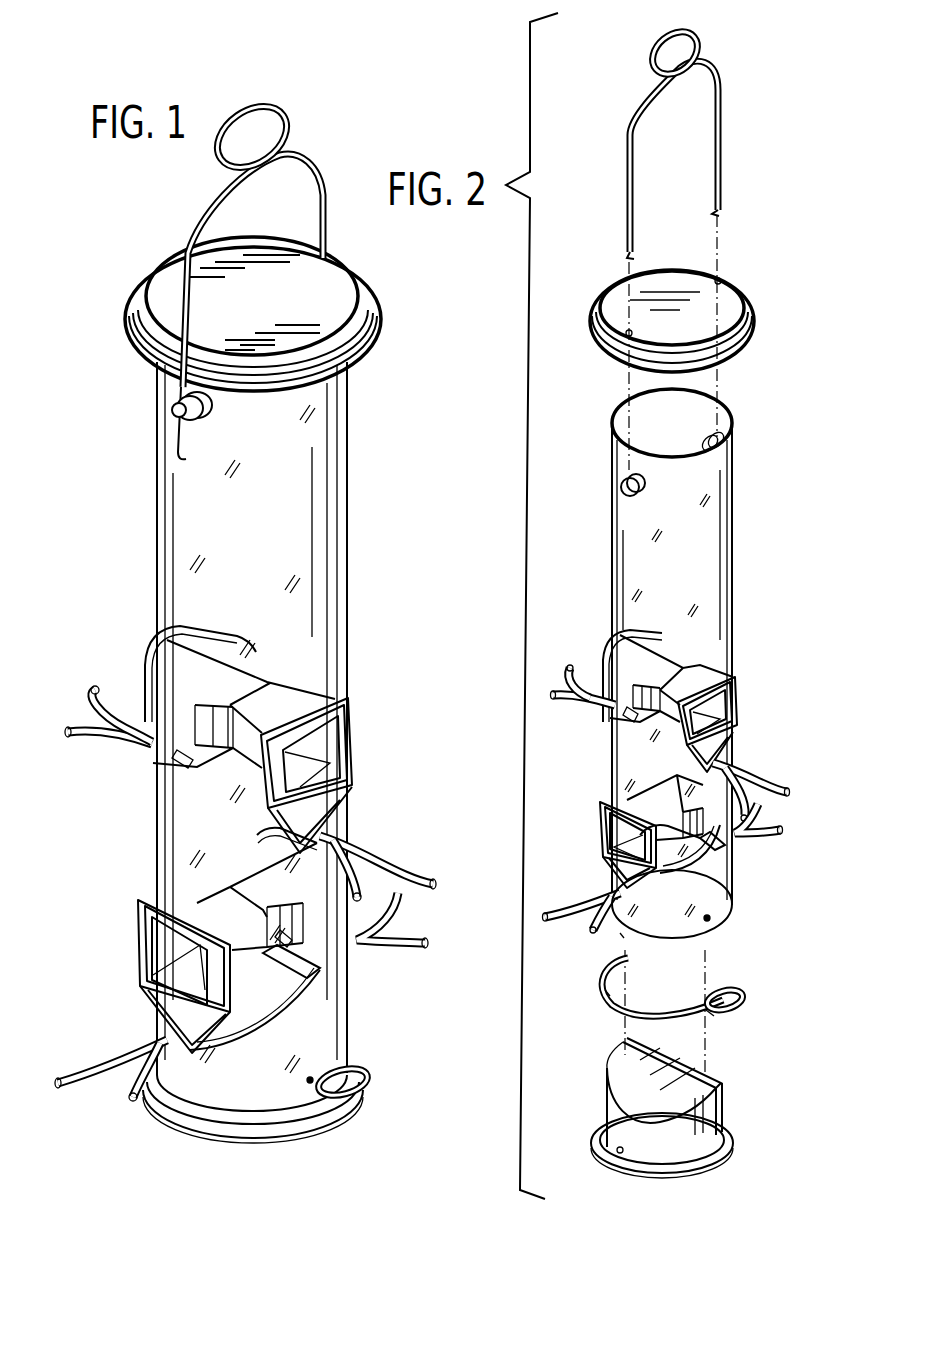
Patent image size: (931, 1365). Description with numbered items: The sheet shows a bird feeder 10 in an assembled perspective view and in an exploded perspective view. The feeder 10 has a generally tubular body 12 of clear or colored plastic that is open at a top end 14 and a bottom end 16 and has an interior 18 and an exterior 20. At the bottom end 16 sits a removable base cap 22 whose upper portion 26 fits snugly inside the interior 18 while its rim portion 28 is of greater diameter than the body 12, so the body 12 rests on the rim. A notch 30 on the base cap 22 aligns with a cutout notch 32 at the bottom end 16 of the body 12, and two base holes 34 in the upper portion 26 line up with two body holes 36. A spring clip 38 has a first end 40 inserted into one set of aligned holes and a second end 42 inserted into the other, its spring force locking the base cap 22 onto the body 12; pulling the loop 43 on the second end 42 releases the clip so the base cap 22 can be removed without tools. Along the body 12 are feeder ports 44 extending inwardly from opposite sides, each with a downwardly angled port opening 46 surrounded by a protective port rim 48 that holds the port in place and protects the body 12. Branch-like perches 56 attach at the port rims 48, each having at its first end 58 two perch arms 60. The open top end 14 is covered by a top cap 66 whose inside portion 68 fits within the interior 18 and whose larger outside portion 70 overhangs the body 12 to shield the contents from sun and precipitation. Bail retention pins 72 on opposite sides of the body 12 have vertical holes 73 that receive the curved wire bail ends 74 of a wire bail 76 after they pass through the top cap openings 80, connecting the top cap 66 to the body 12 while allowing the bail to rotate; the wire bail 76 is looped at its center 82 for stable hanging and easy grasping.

In FIG. 1, the feeder 10 is at (156, 517).
In FIG. 2, the feeder 10 is at (599, 543).
In FIG. 1, the body 12 is at (347, 510).
In FIG. 2, the body 12 is at (733, 555).
In FIG. 2, the top end 14 is at (745, 393).
In FIG. 1, the bottom end 16 is at (347, 1050).
In FIG. 2, the bottom end 16 is at (705, 945).
In FIG. 2, the interior 18 is at (745, 393).
In FIG. 1, the exterior 20 is at (268, 557).
In FIG. 2, the exterior 20 is at (694, 579).
In FIG. 1, the base cap 22 is at (253, 1128).
In FIG. 2, the base cap 22 is at (735, 1165).
In FIG. 2, the upper portion 26 is at (680, 1157).
In FIG. 1, the rim portion 28 is at (182, 1108).
In FIG. 2, the rim portion 28 is at (733, 1140).
In FIG. 2, the notch 30 is at (620, 1150).
In FIG. 2, the cutout notch 32 is at (620, 933).
In FIG. 2, the base holes 34 is at (730, 1120).
In FIG. 2, the body holes 36 is at (710, 917).
In FIG. 1, the spring clip 38 is at (367, 1093).
In FIG. 2, the spring clip 38 is at (607, 993).
In FIG. 2, the first end 40 is at (635, 957).
In FIG. 2, the second end 42 is at (712, 1013).
In FIG. 2, the loop 43 is at (745, 1000).
In FIG. 1, the feeder ports 44 is at (240, 838).
In FIG. 2, the feeder ports 44 is at (668, 751).
In FIG. 1, the port openings 46 is at (313, 763).
In FIG. 2, the port openings 46 is at (700, 720).
In FIG. 1, the protective port rims 48 is at (355, 700).
In FIG. 2, the protective port rims 48 is at (600, 803).
In FIG. 1, the perches 56 is at (68, 735).
In FIG. 1, the first end 58 is at (57, 1083).
In FIG. 1, the perch arms 60 is at (93, 688).
In FIG. 2, the top cap 66 is at (748, 300).
In FIG. 2, the inside portion 68 is at (752, 325).
In FIG. 2, the outside portion 70 is at (730, 285).
In FIG. 1, the bail retention pins 72 is at (170, 410).
In FIG. 1, the vertical holes 73 is at (175, 398).
In FIG. 2, the vertical holes 73 is at (626, 478).
In FIG. 2, the wire bail ends 74 is at (715, 211).
In FIG. 1, the wire bail 76 is at (310, 153).
In FIG. 2, the wire bail 76 is at (728, 73).
In FIG. 2, the top cap openings 80 is at (718, 280).
In FIG. 1, the center 82 is at (263, 102).